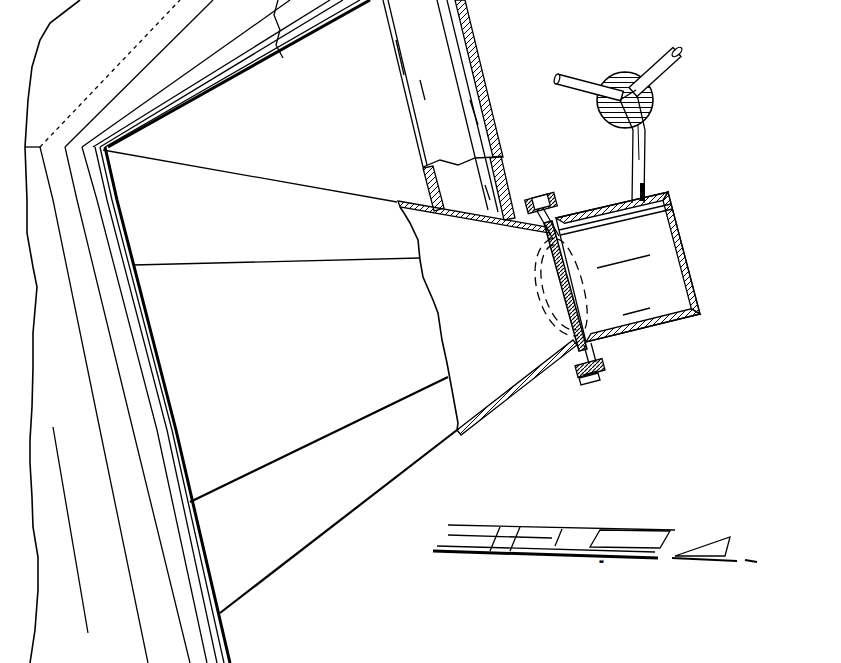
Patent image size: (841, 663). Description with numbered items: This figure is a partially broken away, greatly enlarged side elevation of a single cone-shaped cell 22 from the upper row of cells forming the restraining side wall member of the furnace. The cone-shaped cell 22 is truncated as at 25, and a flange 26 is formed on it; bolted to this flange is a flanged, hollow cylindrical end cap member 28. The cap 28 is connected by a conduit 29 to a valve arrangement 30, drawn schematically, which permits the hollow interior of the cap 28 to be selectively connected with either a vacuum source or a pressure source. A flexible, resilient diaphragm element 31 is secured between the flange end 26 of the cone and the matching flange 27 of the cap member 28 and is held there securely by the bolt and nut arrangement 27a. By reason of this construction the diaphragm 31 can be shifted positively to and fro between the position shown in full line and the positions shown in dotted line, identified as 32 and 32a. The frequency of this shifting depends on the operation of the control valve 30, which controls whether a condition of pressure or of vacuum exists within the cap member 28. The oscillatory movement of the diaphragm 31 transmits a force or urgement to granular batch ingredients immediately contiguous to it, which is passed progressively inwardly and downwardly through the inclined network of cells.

The cell 22 is at (470, 457).
The truncation 25 is at (167, 390).
The flange 26 is at (575, 380).
The matching flange 27 is at (601, 372).
The bolt and nut arrangement 27a is at (598, 360).
The end cap member 28 is at (693, 280).
The conduit 29 is at (647, 153).
The valve arrangement 30 is at (676, 95).
The diaphragm element 31 is at (571, 328).
The diaphragm position 32 is at (547, 310).
The diaphragm position 32a is at (587, 295).